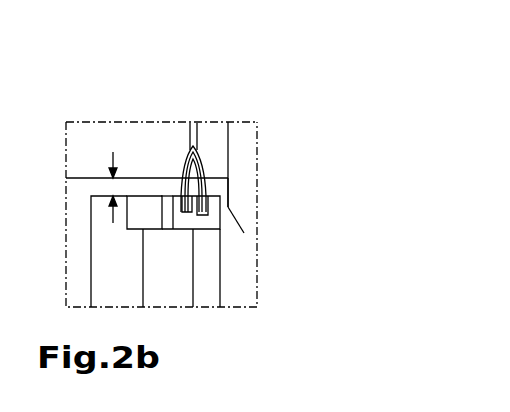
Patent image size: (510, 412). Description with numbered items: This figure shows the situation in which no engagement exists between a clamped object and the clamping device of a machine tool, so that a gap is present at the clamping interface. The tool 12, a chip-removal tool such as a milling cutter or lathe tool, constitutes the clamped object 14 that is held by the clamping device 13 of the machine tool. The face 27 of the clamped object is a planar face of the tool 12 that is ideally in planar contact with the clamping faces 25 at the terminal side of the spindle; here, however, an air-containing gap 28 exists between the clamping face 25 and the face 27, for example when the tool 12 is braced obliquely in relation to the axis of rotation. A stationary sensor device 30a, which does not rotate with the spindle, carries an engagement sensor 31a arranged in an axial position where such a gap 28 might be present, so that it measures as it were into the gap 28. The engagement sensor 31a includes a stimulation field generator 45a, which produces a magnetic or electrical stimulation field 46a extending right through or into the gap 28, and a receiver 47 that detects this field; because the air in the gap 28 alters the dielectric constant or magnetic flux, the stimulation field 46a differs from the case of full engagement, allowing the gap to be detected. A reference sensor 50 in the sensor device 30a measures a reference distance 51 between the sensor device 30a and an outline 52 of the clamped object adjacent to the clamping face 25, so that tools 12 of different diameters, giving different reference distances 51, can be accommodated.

The tool 12 is at (77, 152).
The clamping device 13 is at (246, 169).
The clamped object 14 is at (105, 130).
The clamping faces 25 is at (201, 124).
The face of the clamped object 27 is at (190, 124).
The gap 28 is at (194, 127).
The sensor device 30a is at (92, 257).
The engagement sensor 31a is at (220, 229).
The stimulation field generator 45a is at (203, 210).
The stimulation field 46a is at (196, 150).
The receiver 47 is at (186, 213).
The reference sensor 50 is at (135, 231).
The reference distance 51 is at (112, 187).
The outline of the clamped object 52 is at (136, 183).